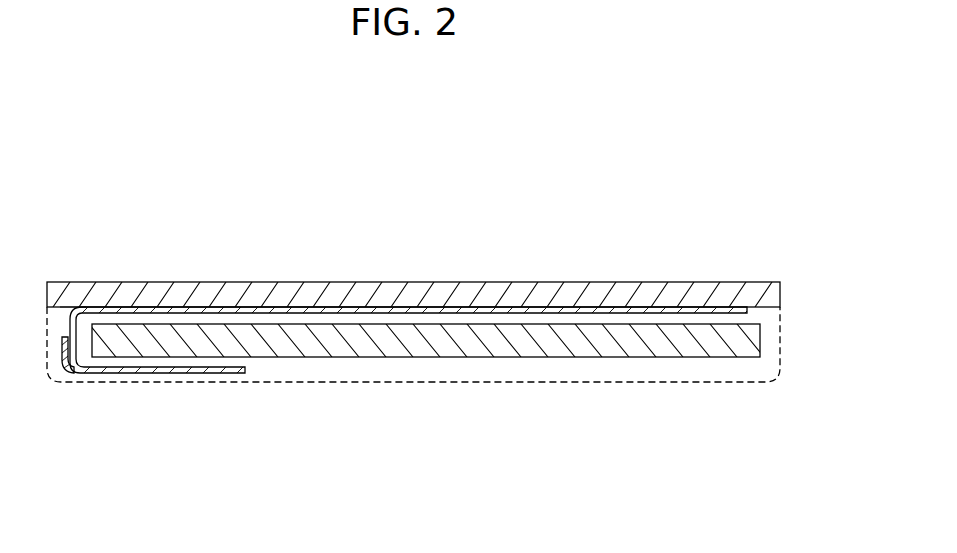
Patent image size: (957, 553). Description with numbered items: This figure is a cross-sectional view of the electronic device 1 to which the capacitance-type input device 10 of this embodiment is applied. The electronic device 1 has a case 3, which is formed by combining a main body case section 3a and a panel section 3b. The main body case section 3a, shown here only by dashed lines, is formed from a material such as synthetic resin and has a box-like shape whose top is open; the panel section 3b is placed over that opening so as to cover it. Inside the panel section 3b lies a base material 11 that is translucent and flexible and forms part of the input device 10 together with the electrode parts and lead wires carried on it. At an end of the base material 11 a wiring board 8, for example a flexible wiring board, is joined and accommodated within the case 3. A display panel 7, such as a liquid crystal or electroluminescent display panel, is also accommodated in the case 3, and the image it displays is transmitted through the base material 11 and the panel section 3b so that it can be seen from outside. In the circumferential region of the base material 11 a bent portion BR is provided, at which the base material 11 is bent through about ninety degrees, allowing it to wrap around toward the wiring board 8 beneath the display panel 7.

The electronic device 1 is at (752, 218).
The case 3 is at (412, 336).
The main body case section 3a is at (632, 382).
The panel section 3b is at (630, 283).
The display panel 7 is at (710, 352).
The wiring board 8 is at (92, 373).
The input device 10 is at (529, 322).
The base material 11 is at (462, 313).
The bent portion BR is at (73, 304).